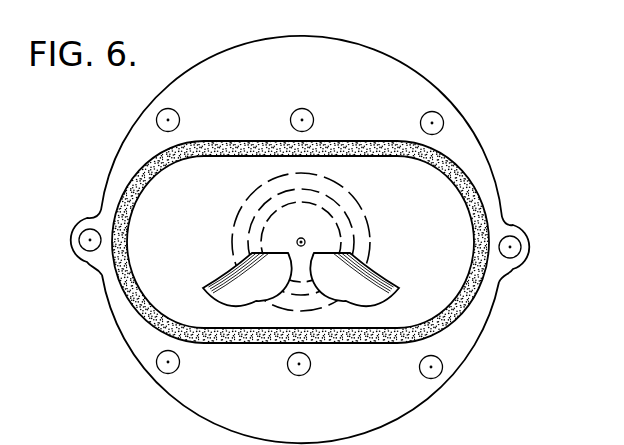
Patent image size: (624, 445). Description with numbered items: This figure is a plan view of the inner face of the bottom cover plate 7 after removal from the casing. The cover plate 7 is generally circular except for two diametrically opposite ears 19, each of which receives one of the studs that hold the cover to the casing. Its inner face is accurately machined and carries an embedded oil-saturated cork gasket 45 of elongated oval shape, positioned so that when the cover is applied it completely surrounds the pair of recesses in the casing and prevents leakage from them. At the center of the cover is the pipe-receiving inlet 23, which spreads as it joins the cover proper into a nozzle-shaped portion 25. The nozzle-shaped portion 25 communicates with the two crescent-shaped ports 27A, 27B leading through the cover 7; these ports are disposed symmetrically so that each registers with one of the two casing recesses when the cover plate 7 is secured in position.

The bottom cover plate 7 is at (107, 276).
The ears 19 is at (95, 217).
The oil-saturated cork gasket 45 is at (118, 218).
The pipe-receiving inlet 23 is at (272, 207).
The nozzle-shaped portion 25 is at (238, 242).
The crescent-shaped port 27A is at (371, 265).
The crescent-shaped port 27B is at (244, 288).